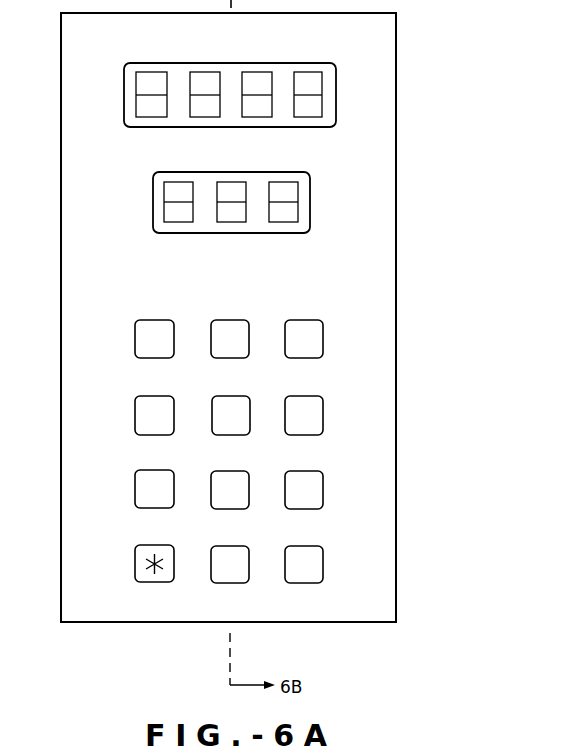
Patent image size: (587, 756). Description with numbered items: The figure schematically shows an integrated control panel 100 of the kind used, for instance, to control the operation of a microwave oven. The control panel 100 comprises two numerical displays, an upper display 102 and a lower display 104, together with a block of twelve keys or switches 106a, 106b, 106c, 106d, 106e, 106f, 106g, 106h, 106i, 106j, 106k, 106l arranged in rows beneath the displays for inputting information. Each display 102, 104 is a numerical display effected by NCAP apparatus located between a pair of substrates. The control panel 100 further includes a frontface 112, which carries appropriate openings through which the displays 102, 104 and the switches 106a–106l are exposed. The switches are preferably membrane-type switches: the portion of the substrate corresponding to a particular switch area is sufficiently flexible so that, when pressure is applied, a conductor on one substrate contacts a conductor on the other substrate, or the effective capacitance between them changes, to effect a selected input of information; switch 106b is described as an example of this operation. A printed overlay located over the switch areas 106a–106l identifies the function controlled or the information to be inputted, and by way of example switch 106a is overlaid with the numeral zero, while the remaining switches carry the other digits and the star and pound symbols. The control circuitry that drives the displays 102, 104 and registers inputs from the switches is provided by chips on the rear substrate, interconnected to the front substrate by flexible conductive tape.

The control panel 100 is at (440, 191).
The display 102 is at (330, 118).
The display 104 is at (307, 224).
The switch 106a is at (142, 322).
The switch 106b is at (243, 323).
The switch 106c is at (318, 323).
The switch 106d is at (142, 398).
The switch 106e is at (246, 398).
The switch 106f is at (320, 398).
The switch 106g is at (142, 472).
The switch 106h is at (238, 473).
The switch 106i is at (308, 473).
The switch 106j is at (142, 547).
The switch 106k is at (240, 548).
The switch 106l is at (310, 548).
The frontface 112 is at (383, 587).